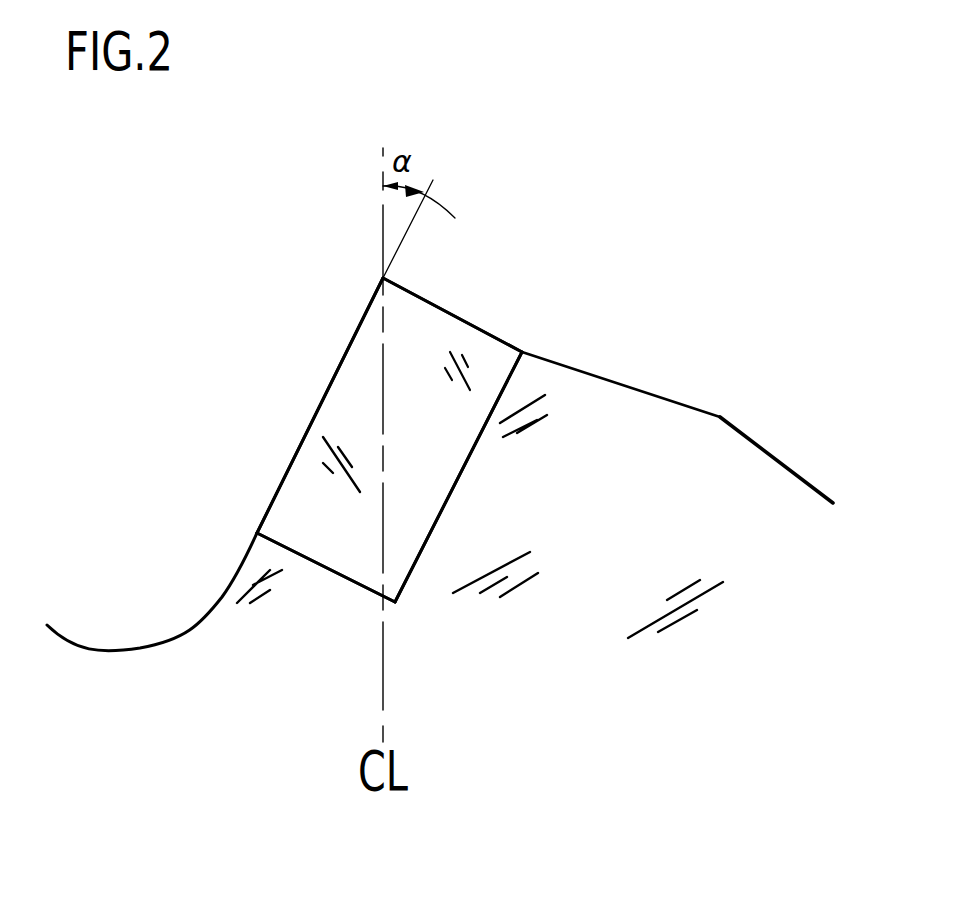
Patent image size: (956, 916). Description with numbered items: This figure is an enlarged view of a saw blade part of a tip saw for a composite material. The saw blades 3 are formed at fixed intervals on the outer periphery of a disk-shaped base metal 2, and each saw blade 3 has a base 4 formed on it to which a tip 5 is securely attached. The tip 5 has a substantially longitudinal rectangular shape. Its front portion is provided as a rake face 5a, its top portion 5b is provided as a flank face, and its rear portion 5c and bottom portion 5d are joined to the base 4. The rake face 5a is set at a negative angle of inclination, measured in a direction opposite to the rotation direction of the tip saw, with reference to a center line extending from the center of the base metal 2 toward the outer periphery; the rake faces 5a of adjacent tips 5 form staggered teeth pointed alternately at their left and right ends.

The base metal 2 is at (218, 653).
The saw blade 3 is at (703, 488).
The base 4 is at (327, 567).
The tip 5 is at (507, 338).
The rake face 5a is at (322, 395).
The top portion 5b is at (473, 323).
The rear portion 5c is at (460, 478).
The bottom portion 5d is at (345, 567).